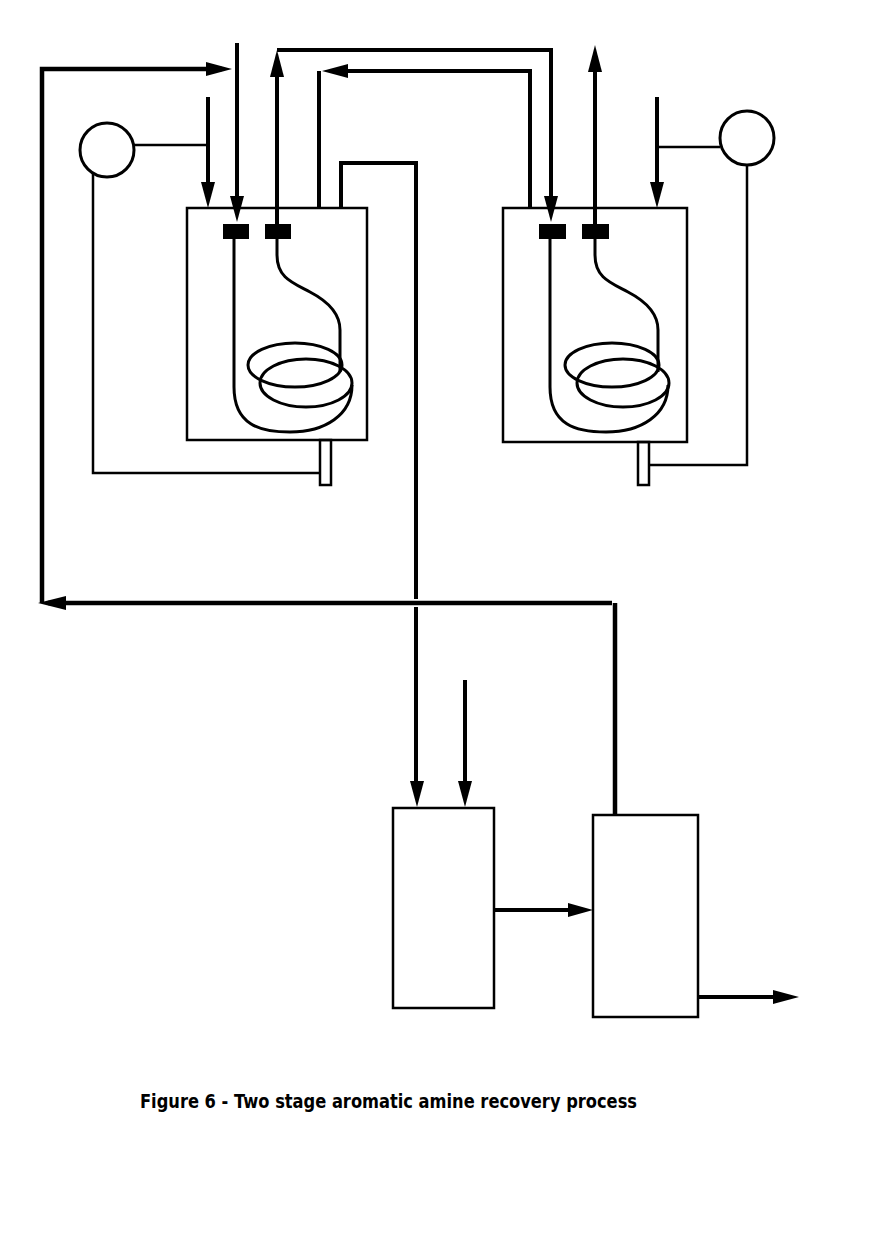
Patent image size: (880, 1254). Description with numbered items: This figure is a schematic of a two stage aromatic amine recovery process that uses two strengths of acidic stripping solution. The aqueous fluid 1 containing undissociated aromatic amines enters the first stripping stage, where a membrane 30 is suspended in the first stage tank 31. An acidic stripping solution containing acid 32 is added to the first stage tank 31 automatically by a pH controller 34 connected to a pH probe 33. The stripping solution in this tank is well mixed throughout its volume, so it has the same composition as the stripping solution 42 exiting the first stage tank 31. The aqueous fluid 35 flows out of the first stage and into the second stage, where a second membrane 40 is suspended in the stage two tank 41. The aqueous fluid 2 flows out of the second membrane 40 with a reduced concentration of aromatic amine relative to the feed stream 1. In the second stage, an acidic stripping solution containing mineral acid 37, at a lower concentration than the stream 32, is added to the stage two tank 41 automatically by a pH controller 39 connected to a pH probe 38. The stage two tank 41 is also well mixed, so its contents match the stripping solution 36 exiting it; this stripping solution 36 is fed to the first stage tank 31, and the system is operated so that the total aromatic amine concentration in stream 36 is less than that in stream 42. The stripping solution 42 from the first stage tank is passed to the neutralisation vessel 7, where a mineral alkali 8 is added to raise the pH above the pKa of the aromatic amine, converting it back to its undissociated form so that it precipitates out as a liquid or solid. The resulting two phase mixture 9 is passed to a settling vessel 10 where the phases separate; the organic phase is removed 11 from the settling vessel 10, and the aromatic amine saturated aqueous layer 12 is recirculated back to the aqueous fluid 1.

The aqueous fluid 1 is at (236, 114).
The aqueous fluid 2 is at (592, 125).
The neutralisation vessel 7 is at (443, 908).
The mineral alkali 8 is at (464, 728).
The two phase mixture 9 is at (543, 896).
The settling vessel 10 is at (645, 916).
The organic phase removal 11 is at (748, 984).
The aromatic amine saturated aqueous layer 12 is at (639, 709).
The membrane 30 is at (216, 348).
The first stage tank 31 is at (277, 324).
The acidic stripping solution containing acid 32 is at (187, 152).
The pH probe 33 is at (322, 476).
The pH controller 34 is at (200, 298).
The aqueous fluid 35 is at (414, 128).
The stripping solution 36 is at (424, 136).
The acidic stripping solution containing mineral acid 37 is at (657, 139).
The pH probe 38 is at (658, 474).
The pH controller 39 is at (711, 288).
The second membrane 40 is at (534, 349).
The stage 2 tank 41 is at (595, 325).
The stripping solution 42 is at (382, 471).